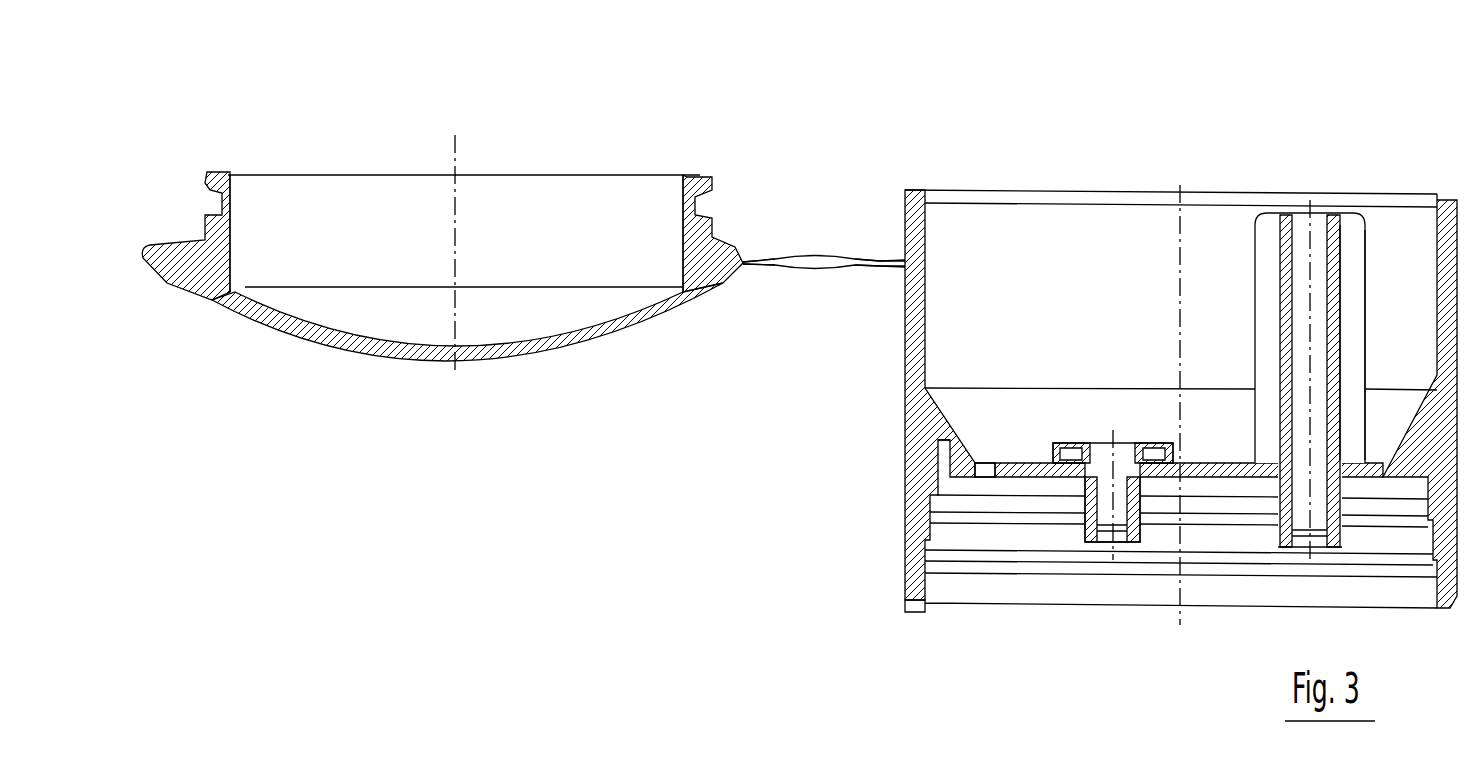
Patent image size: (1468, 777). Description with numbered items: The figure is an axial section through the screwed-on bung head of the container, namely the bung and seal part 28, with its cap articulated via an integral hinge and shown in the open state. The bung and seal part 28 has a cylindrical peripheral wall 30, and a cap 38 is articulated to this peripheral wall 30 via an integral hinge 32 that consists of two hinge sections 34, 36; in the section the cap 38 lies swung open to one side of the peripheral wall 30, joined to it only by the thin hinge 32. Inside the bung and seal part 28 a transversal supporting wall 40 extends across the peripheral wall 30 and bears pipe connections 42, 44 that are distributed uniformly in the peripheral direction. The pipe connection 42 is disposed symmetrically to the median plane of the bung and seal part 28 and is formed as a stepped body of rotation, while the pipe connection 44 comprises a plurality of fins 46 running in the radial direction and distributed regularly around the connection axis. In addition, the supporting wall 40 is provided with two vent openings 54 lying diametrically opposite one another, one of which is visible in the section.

The bung and seal part 28 is at (442, 304).
The cylindrical peripheral wall 30 is at (927, 225).
The integral hinge 32 is at (824, 241).
The hinge section 34 is at (773, 267).
The hinge section 36 is at (862, 267).
The cap 38 is at (382, 236).
The transversal supporting wall 40 is at (1236, 463).
The pipe connection 42 is at (1068, 445).
The pipe connection 44 is at (1282, 262).
The fins 46 is at (1347, 273).
The vent opening 54 is at (988, 462).